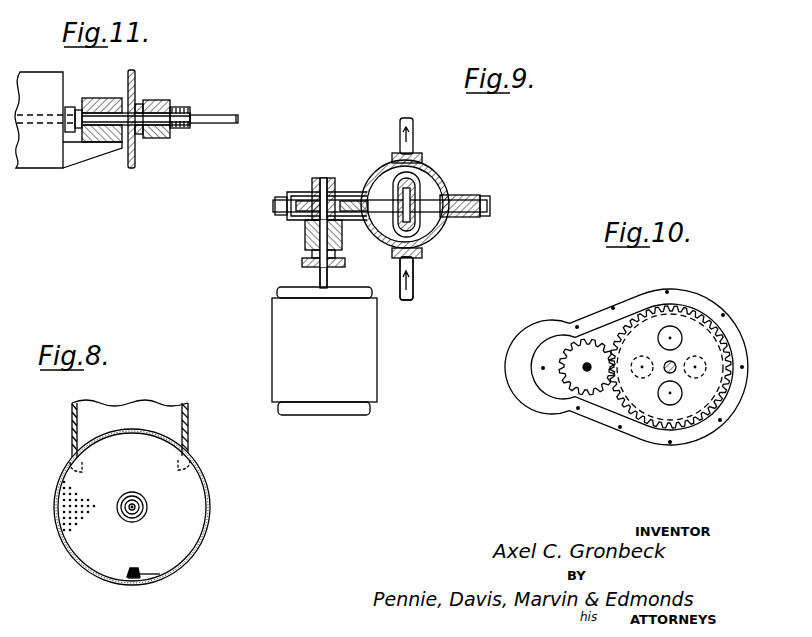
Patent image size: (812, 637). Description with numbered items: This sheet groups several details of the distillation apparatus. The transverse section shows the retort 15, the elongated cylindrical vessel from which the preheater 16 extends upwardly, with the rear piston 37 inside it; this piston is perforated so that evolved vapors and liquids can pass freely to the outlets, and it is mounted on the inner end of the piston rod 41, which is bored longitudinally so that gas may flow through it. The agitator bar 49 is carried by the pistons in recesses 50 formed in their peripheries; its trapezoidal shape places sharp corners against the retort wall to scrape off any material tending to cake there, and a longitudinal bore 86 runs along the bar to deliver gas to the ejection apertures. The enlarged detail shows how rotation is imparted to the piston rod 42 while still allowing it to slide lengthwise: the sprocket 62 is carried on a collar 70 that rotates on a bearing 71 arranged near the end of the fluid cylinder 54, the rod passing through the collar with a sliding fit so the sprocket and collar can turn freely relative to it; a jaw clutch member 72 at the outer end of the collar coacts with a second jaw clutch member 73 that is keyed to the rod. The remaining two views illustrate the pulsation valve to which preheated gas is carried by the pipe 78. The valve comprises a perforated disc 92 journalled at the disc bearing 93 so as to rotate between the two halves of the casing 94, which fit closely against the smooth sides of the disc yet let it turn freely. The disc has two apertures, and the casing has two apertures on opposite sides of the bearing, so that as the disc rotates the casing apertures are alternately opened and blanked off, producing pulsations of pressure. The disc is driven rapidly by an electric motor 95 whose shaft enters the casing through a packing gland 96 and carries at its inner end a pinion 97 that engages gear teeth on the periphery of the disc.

In FIG. 8, the retort 15 is at (210, 512).
In FIG. 8, the preheater 16 is at (189, 420).
In FIG. 8, the rear piston 37 is at (181, 489).
In FIG. 8, the piston rod 41 is at (133, 497).
In FIG. 11, the piston rod 42 is at (220, 115).
In FIG. 8, the agitator bar 49 is at (131, 578).
In FIG. 8, the recesses 50 is at (162, 573).
In FIG. 11, the fluid cylinder 54 is at (25, 72).
In FIG. 11, the sprocket 62 is at (137, 86).
In FIG. 11, the collar 70 is at (141, 134).
In FIG. 11, the bearing 71 is at (113, 142).
In FIG. 11, the jaw clutch member 72 is at (150, 105).
In FIG. 11, the jaw clutch member 73 is at (170, 138).
In FIG. 9, the pipe 78 is at (414, 292).
In FIG. 8, the longitudinal bore 86 is at (130, 573).
In FIG. 9, the perforated disc 92 is at (462, 194).
In FIG. 10, the perforated disc 92 is at (693, 328).
In FIG. 9, the disc bearing 93 is at (420, 224).
In FIG. 10, the disc bearing 93 is at (665, 371).
In FIG. 9, the casing 94 is at (438, 169).
In FIG. 10, the casing 94 is at (690, 291).
In FIG. 9, the electric motor 95 is at (282, 341).
In FIG. 9, the packing gland 96 is at (307, 240).
In FIG. 9, the pinion 97 is at (304, 194).
In FIG. 10, the pinion 97 is at (560, 353).